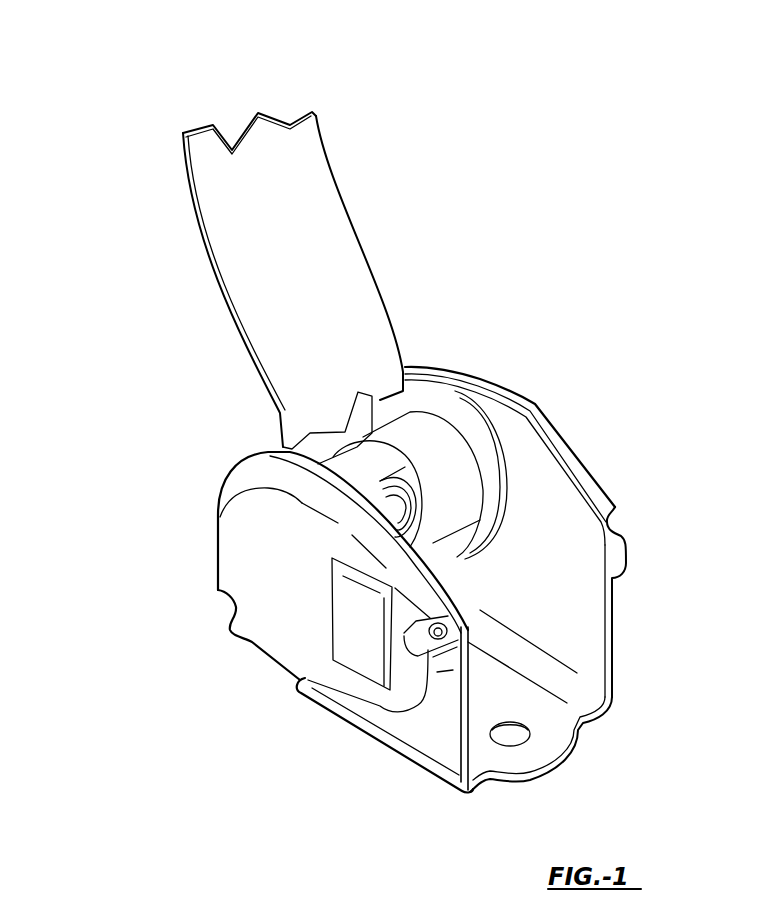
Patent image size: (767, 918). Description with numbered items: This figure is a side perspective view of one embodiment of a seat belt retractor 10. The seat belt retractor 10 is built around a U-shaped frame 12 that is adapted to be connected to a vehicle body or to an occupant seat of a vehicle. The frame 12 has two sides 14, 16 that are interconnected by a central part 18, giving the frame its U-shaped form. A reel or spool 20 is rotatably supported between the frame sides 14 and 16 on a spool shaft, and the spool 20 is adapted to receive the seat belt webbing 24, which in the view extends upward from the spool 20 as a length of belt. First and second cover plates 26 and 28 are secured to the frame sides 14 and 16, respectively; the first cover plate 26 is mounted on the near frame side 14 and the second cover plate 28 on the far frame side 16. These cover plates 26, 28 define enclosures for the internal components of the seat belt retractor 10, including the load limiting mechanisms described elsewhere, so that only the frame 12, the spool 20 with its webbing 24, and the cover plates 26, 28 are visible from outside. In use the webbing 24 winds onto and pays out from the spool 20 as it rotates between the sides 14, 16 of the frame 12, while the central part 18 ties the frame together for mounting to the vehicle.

The seat belt retractor 10 is at (444, 352).
The frame 12 is at (606, 706).
The frame side 14 is at (432, 736).
The frame side 16 is at (587, 624).
The central part 18 is at (550, 747).
The spool 20 is at (457, 415).
The seat belt webbing 24 is at (302, 182).
The first cover plate 26 is at (248, 550).
The second cover plate 28 is at (580, 463).